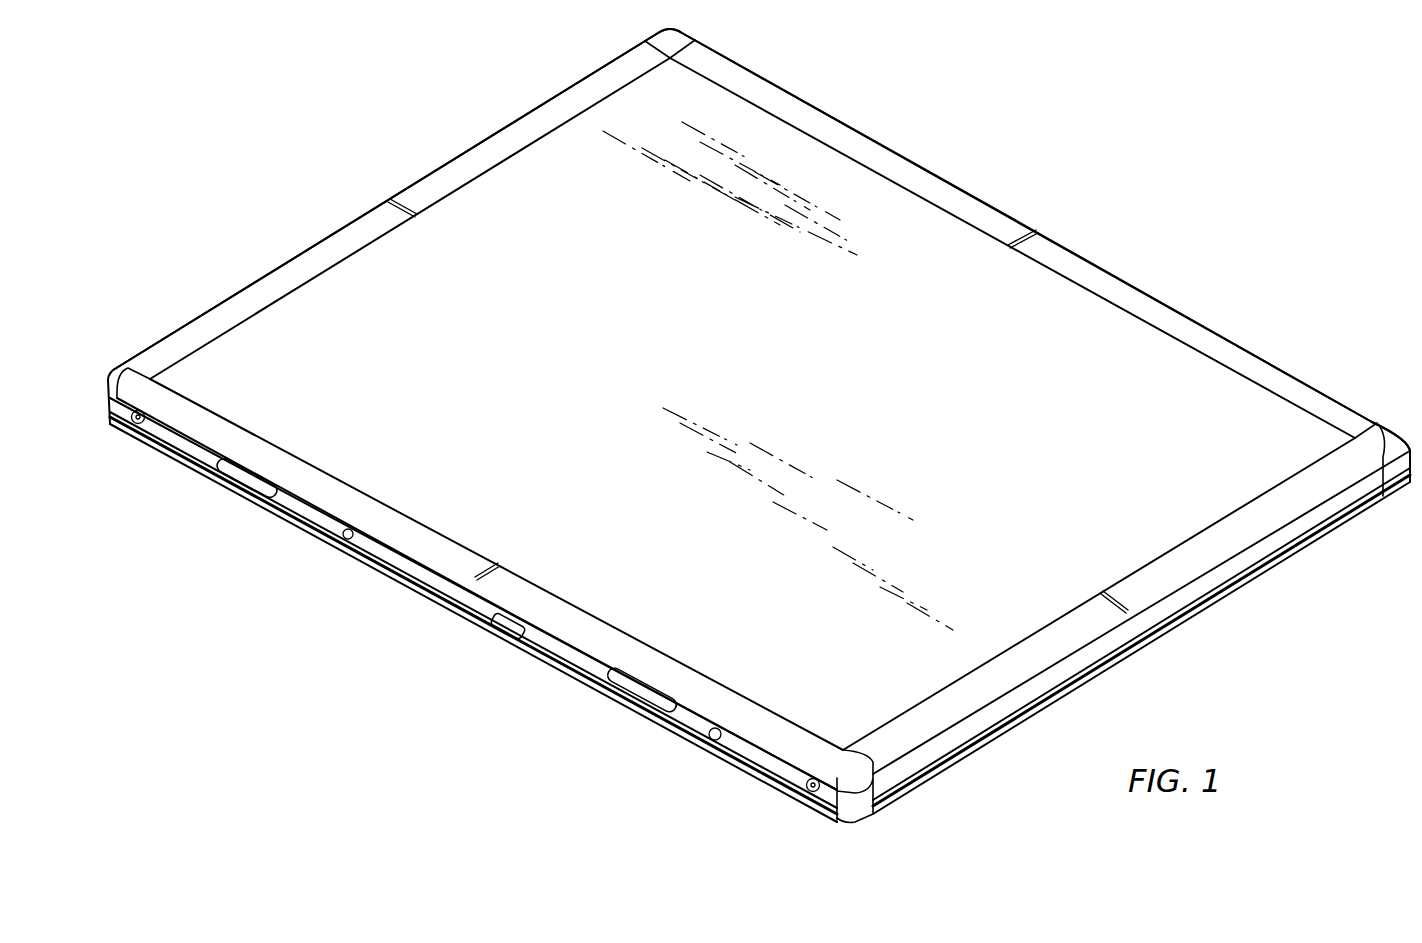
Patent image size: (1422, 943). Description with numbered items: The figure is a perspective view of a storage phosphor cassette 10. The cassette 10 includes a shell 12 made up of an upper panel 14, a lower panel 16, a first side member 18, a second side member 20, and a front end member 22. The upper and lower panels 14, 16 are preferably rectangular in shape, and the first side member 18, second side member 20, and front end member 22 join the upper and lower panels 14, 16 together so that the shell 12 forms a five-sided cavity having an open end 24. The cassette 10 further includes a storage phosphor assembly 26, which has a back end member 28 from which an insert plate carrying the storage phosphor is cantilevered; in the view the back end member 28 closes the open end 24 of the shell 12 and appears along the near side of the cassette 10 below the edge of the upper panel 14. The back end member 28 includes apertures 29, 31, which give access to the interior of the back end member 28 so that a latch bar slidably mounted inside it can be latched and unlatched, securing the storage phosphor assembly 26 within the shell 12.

The storage phosphor cassette 10 is at (1013, 160).
The shell 12 is at (765, 81).
The upper panel 14 is at (1143, 328).
The lower panel 16 is at (984, 748).
The first side member 18 is at (345, 238).
The second side member 20 is at (1170, 586).
The front end member 22 is at (851, 141).
The open end 24 is at (660, 653).
The storage phosphor assembly 26 is at (721, 760).
The back end member 28 is at (775, 763).
The aperture 29 is at (242, 490).
The aperture 31 is at (503, 642).